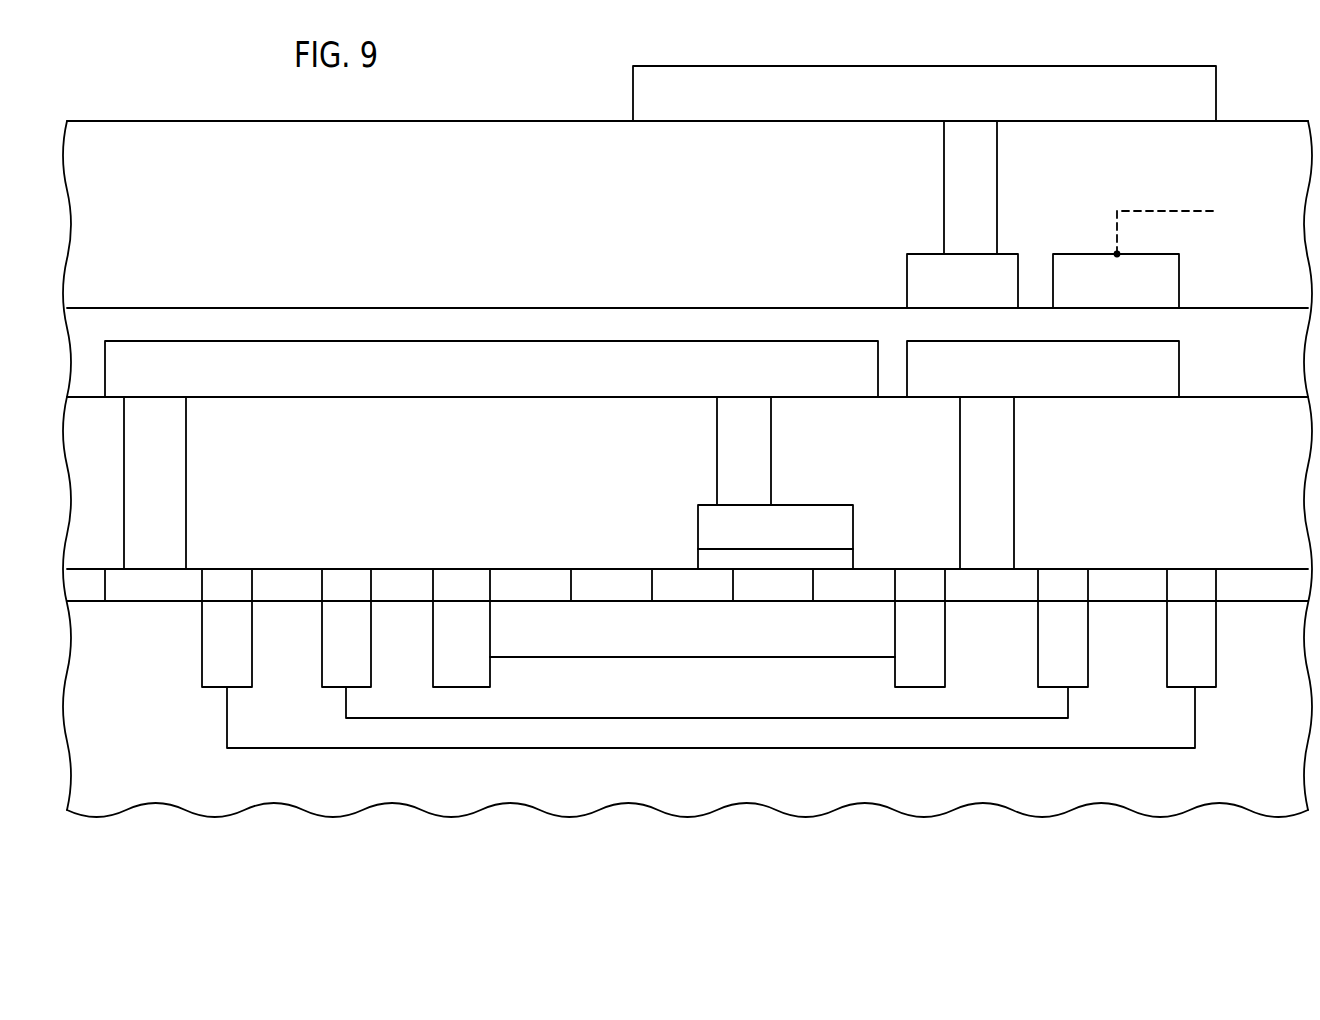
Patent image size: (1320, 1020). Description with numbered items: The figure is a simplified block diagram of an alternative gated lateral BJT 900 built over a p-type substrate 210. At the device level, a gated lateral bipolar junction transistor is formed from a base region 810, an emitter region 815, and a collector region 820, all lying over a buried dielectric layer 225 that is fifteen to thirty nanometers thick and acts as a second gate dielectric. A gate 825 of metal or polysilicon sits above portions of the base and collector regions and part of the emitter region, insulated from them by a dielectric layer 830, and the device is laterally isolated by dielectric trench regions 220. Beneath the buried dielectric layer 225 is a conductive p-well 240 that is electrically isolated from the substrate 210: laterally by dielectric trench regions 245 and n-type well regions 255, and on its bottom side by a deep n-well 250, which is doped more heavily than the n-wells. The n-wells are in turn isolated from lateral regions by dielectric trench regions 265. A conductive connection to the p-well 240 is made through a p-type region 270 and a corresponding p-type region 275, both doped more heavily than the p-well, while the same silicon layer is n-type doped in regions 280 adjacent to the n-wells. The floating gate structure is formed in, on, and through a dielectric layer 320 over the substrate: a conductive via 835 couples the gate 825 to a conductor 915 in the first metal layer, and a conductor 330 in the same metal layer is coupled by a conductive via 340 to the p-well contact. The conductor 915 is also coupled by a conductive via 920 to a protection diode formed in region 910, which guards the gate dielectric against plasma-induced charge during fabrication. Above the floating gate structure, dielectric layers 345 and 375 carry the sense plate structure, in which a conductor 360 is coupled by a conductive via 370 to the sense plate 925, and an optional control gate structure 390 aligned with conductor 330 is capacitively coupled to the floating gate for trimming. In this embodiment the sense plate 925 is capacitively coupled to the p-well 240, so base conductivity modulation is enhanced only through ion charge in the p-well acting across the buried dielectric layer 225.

The gated lateral BJT 900 is at (917, 24).
The sense plate 925 is at (903, 103).
The dielectric layer 375 is at (118, 223).
The conductive via 370 is at (993, 172).
The conductor 360 is at (947, 293).
The control gate structure 390 is at (1101, 293).
The dielectric layer 345 is at (1221, 363).
The conductor 915 is at (434, 381).
The conductor 330 is at (1022, 381).
The dielectric layer 320 is at (1221, 480).
The conductive via 920 is at (177, 463).
The conductive via 835 is at (762, 446).
The conductive via 340 is at (1005, 447).
The gate 825 is at (758, 540).
The dielectric layer 830 is at (847, 563).
The region 910 is at (113, 573).
The n-type doped regions 280 is at (289, 578).
The p-type region 275 is at (402, 578).
The dielectric trench regions 265 is at (212, 650).
The dielectric trench regions 245 is at (332, 650).
The dielectric trench regions 220 is at (446, 650).
The n-type well regions 255 is at (277, 670).
The deep n-well 250 is at (977, 740).
The p-well 240 is at (813, 703).
The p-type region 270 is at (988, 595).
The buried dielectric layer 225 is at (653, 647).
The collector region 820 is at (530, 593).
The base region 810 is at (609, 593).
The emitter region 815 is at (693, 593).
The substrate 210 is at (1244, 775).